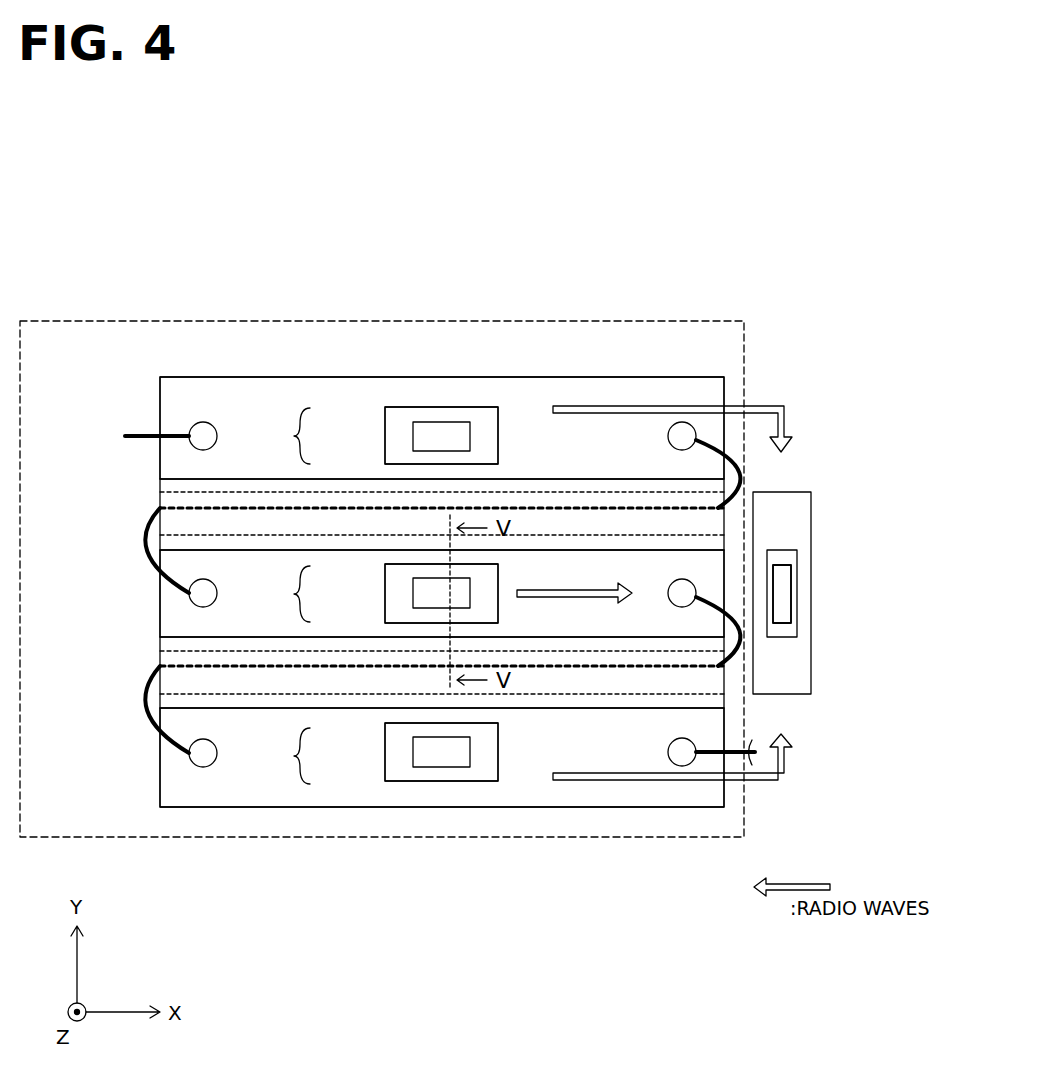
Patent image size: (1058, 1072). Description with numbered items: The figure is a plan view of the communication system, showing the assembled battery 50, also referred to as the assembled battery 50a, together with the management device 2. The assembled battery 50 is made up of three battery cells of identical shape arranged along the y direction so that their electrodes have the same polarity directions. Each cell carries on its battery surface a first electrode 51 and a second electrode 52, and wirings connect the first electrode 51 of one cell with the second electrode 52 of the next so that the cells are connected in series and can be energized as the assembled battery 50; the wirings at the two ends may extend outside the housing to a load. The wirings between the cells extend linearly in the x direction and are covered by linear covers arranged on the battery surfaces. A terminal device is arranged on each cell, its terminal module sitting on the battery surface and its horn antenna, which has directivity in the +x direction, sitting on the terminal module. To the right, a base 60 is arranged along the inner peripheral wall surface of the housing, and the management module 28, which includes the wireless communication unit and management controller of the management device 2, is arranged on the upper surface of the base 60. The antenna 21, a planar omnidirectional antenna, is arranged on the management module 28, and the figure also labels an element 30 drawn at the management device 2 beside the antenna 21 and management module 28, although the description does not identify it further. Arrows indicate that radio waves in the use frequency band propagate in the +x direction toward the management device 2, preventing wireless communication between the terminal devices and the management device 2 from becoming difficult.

The assembled battery 50 is at (389, 550).
The assembled battery 50a is at (672, 321).
The first electrode 51 is at (206, 423).
The second electrode 52 is at (668, 436).
The base 60 is at (811, 672).
The tag holder 30 is at (800, 636).
The management device 2 is at (876, 570).
The antenna 21 is at (792, 574).
The management module 28 is at (792, 612).